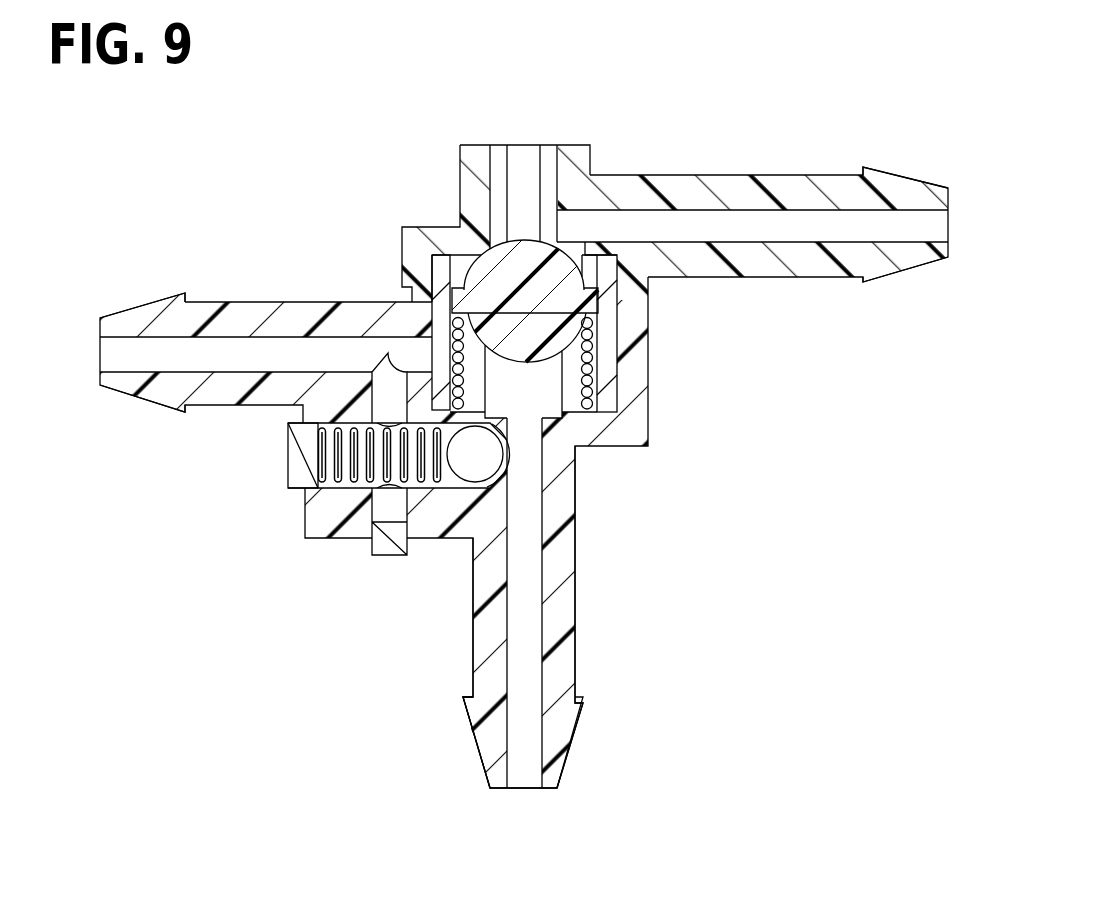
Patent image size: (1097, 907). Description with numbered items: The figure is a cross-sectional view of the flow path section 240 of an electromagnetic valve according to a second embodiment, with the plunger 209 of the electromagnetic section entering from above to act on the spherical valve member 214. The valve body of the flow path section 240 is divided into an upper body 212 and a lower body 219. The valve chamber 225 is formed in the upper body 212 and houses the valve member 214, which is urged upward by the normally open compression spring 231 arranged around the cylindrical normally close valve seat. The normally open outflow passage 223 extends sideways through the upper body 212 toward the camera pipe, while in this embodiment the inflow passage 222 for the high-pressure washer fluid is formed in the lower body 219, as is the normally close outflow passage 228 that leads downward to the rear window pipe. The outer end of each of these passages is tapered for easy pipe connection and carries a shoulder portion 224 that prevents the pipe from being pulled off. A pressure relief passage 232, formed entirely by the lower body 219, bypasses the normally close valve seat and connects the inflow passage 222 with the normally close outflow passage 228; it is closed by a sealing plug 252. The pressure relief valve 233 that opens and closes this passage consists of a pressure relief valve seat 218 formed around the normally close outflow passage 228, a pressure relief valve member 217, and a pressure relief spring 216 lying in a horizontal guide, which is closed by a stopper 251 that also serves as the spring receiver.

The plunger 209 is at (524, 182).
The upper body 212 is at (677, 175).
The valve member 214 is at (487, 270).
The pressure relief spring 216 is at (323, 451).
The pressure relief valve member 217 is at (472, 468).
The pressure relief valve seat 218 is at (488, 472).
The lower body 219 is at (577, 573).
The inflow passage 222 is at (190, 362).
The normally open outflow passage 223 is at (725, 212).
The shoulder portion 224 is at (863, 172).
The valve chamber 225 is at (607, 305).
The normally close outflow passage 228 is at (528, 772).
The normally open compression spring 231 is at (590, 348).
The pressure relief passage 232 is at (373, 363).
The pressure relief valve 233 is at (496, 455).
The flow path section 240 is at (662, 396).
The stopper 251 is at (300, 468).
The sealing plug 252 is at (383, 547).